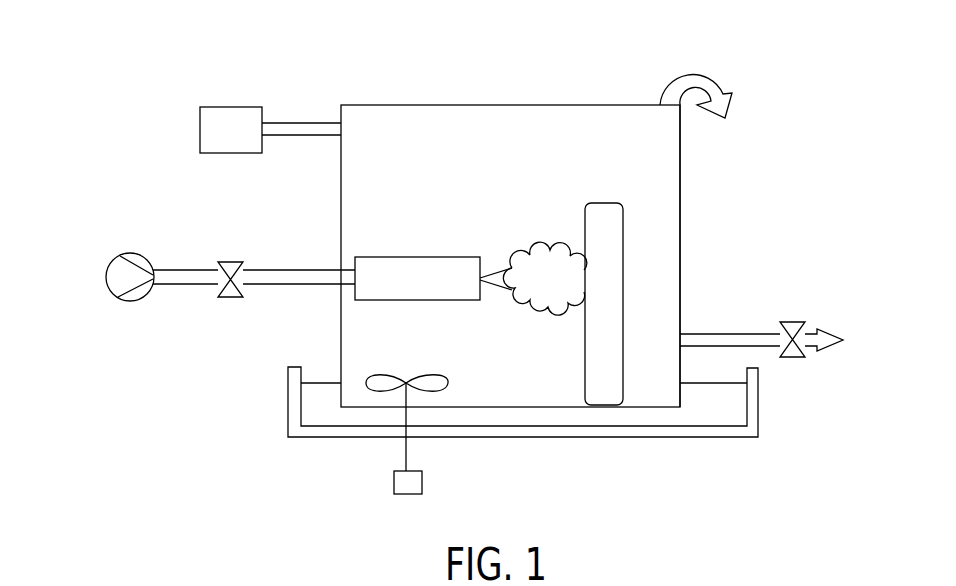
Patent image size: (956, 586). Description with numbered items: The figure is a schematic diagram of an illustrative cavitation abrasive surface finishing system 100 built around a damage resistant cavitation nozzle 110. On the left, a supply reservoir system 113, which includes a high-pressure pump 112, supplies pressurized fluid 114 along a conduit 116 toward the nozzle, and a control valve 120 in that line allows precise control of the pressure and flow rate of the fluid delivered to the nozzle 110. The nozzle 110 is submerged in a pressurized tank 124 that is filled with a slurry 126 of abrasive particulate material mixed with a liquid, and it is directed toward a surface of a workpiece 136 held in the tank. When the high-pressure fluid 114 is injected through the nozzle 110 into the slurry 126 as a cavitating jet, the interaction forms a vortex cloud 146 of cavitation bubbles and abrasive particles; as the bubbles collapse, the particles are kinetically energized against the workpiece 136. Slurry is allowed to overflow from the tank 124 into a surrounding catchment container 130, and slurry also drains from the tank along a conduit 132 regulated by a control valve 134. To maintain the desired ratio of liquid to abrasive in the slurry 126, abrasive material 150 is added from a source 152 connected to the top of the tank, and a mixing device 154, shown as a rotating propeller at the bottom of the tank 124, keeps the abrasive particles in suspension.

The cavitation abrasive surface finishing system 100 is at (128, 76).
The damage resistant cavitation nozzle 110 is at (415, 270).
The high-pressure pump 112 is at (117, 282).
The supply reservoir system 113 is at (98, 233).
The pressurized fluid 114 is at (188, 272).
The conduit 116 is at (297, 270).
The control valve 120 is at (240, 288).
The pressurized tank 124 is at (680, 178).
The slurry 126 is at (672, 223).
The catchment container 130 is at (755, 407).
The conduit 132 is at (728, 333).
The control valve 134 is at (793, 322).
The workpiece 136 is at (605, 218).
The vortex cloud 146 is at (527, 253).
The abrasive material 150 is at (230, 135).
The source 152 is at (218, 107).
The mixing device 154 is at (412, 483).